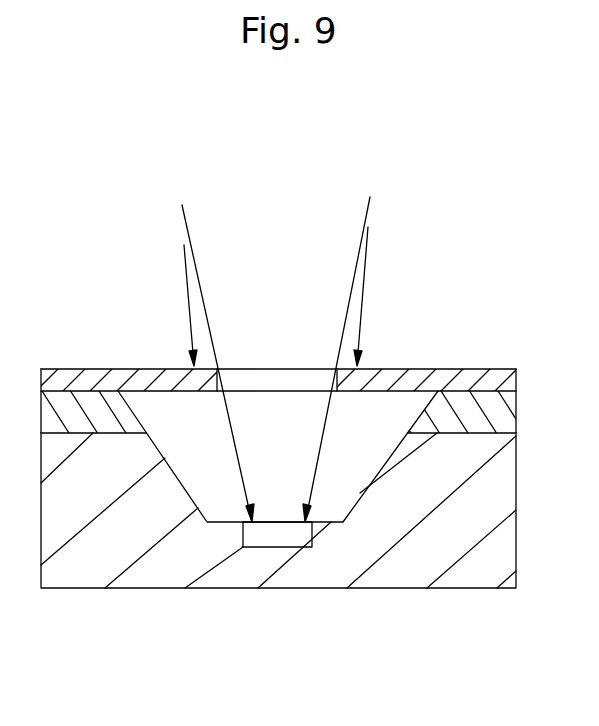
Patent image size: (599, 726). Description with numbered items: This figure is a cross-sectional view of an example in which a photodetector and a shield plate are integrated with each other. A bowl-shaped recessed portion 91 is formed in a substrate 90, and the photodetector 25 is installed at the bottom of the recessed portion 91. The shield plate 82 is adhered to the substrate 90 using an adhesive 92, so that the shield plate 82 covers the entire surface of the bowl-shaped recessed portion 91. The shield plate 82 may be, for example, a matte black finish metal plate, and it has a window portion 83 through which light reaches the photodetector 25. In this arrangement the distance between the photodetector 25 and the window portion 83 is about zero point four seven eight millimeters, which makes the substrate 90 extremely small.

The photodetector 25 is at (267, 538).
The shield plate 82 is at (507, 373).
The window portion 83 is at (276, 368).
The substrate 90 is at (495, 550).
The recessed portion 91 is at (358, 453).
The adhesive 92 is at (502, 410).